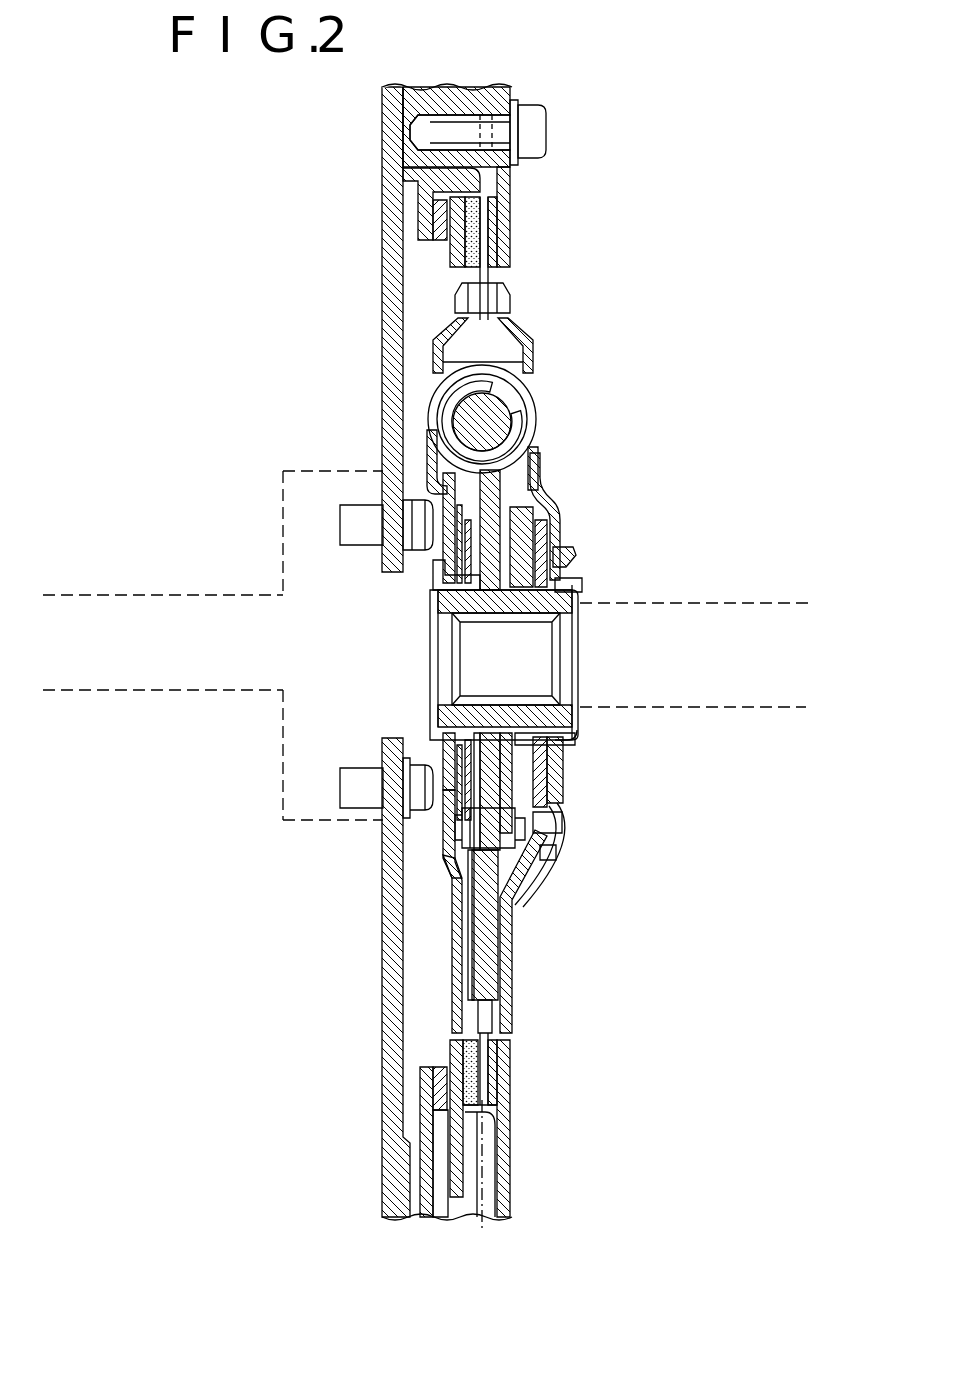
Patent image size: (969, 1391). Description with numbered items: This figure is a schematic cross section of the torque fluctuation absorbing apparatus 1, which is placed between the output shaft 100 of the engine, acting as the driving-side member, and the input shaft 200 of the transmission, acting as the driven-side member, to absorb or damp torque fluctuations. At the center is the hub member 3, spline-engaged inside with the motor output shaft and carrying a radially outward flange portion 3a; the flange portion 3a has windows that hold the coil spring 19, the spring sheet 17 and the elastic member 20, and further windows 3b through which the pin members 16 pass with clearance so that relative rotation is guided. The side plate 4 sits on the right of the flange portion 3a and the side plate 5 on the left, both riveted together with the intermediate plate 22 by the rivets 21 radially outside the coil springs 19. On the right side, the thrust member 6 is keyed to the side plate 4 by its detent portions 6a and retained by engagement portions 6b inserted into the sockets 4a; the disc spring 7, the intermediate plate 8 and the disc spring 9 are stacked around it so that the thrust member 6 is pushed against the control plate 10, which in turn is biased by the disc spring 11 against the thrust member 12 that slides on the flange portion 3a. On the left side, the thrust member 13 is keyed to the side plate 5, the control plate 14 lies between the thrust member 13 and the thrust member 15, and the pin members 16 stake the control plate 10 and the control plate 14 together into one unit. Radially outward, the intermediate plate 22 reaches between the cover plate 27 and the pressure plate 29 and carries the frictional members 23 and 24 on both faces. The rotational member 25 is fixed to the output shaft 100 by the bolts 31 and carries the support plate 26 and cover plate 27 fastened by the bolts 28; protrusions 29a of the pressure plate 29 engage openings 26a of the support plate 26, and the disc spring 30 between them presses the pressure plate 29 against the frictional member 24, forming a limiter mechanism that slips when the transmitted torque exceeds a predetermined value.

The torque fluctuation absorbing apparatus 1 is at (742, 216).
The hub member 3 is at (445, 602).
The flange portion 3a is at (480, 494).
The windows 3b is at (462, 905).
The side plate 4 is at (522, 336).
The sockets 4a is at (557, 855).
The side plate 5 is at (455, 333).
The thrust member 6 is at (542, 482).
The detent portions 6a is at (582, 592).
The engagement portions 6b is at (567, 860).
The disc spring 7 is at (548, 505).
The intermediate plate 8 is at (550, 532).
The disc spring 9 is at (567, 557).
The control plate 10 is at (537, 468).
The disc spring 11 is at (572, 586).
The thrust member 12 is at (502, 604).
The thrust member 13 is at (450, 592).
The control plate 14 is at (443, 570).
The thrust member 15 is at (487, 740).
The pin members 16 is at (487, 832).
The spring sheet 17 is at (526, 395).
The coil springs 19 is at (452, 400).
The elastic members 20 is at (470, 420).
The rivets 21 is at (510, 297).
The intermediate plate 22 is at (483, 245).
The frictional member 23 is at (496, 218).
The frictional member 24 is at (486, 250).
The rotational member 25 is at (382, 130).
The support plate 26 is at (413, 200).
The openings 26a is at (440, 1218).
The cover plate 27 is at (505, 185).
The bolts 28 is at (542, 120).
The pressure plate 29 is at (455, 255).
The protrusions 29a is at (462, 1167).
The disc spring 30 is at (440, 225).
The bolts 31 is at (340, 527).
The output shaft 100 is at (150, 620).
The input shaft 200 is at (766, 688).